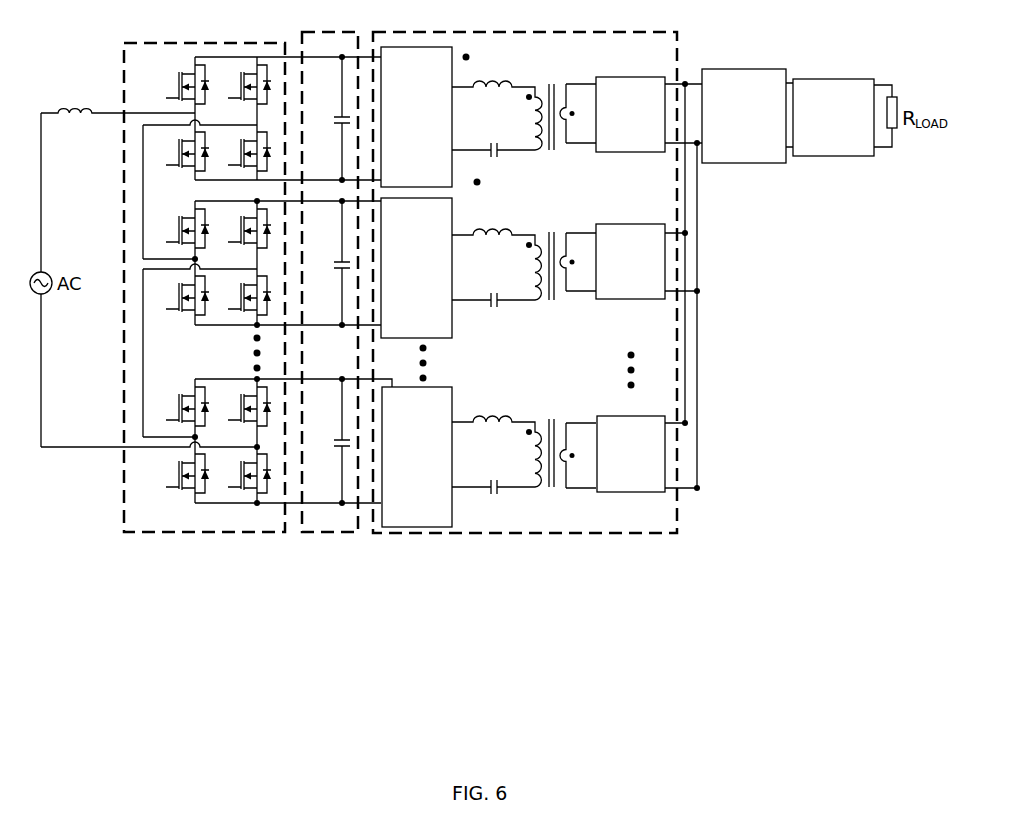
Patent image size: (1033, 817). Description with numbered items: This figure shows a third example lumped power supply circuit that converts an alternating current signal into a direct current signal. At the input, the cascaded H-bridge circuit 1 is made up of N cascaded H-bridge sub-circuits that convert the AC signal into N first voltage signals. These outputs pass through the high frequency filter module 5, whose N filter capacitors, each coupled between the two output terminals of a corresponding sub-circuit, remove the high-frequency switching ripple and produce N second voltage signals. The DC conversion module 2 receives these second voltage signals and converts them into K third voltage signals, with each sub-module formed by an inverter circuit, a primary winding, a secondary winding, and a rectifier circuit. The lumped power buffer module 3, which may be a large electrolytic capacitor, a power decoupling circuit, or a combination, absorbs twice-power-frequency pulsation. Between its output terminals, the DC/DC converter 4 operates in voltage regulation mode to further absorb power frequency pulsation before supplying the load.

The cascaded H-bridge circuit 1 is at (249, 44).
The DC conversion module 2 is at (463, 33).
The lumped power buffer module 3 is at (745, 70).
The DC/DC converter 4 is at (814, 79).
The high frequency filter module 5 is at (318, 33).